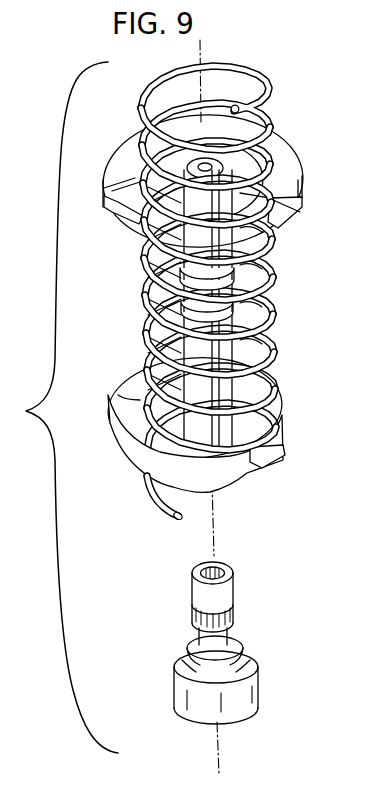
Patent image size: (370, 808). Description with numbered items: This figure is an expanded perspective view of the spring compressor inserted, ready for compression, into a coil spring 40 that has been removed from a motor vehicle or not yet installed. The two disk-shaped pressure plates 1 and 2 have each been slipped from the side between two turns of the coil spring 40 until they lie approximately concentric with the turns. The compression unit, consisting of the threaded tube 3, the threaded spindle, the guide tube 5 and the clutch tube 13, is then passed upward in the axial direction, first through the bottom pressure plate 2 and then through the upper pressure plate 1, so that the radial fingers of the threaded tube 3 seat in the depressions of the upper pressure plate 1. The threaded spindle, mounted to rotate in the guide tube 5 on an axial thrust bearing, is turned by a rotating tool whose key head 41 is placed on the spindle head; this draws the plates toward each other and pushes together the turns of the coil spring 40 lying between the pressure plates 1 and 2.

The upper pressure plate 1 is at (292, 162).
The bottom pressure plate 2 is at (242, 475).
The threaded tube 3 is at (258, 246).
The guide tube 5 is at (278, 347).
The clutch tube 13 is at (260, 284).
The coil spring 40 is at (207, 294).
The key head 41 is at (225, 592).